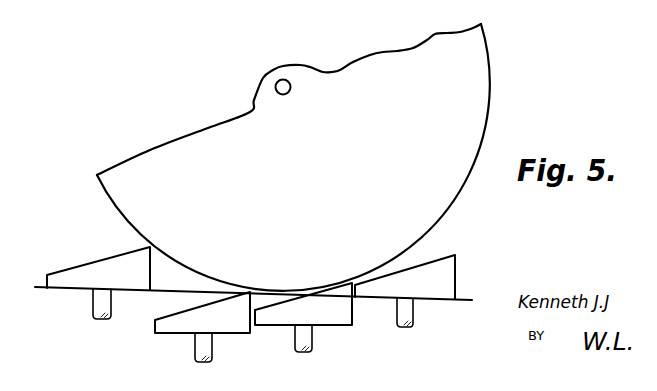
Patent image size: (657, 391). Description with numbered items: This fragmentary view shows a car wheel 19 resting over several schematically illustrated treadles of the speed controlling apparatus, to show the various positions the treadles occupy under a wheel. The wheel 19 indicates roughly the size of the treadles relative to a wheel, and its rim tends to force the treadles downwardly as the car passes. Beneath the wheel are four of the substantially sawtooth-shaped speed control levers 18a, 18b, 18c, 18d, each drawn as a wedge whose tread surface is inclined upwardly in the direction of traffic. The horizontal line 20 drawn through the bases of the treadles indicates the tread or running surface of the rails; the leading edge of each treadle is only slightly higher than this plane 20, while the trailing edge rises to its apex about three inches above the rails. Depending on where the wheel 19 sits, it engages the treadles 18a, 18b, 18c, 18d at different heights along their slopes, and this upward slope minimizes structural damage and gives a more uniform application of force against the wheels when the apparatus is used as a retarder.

The wheel 19 is at (480, 98).
The horizontal line 20 is at (70, 290).
The speed control lever 18a is at (93, 270).
The speed control lever 18b is at (226, 323).
The speed control lever 18c is at (337, 312).
The speed control lever 18d is at (443, 268).